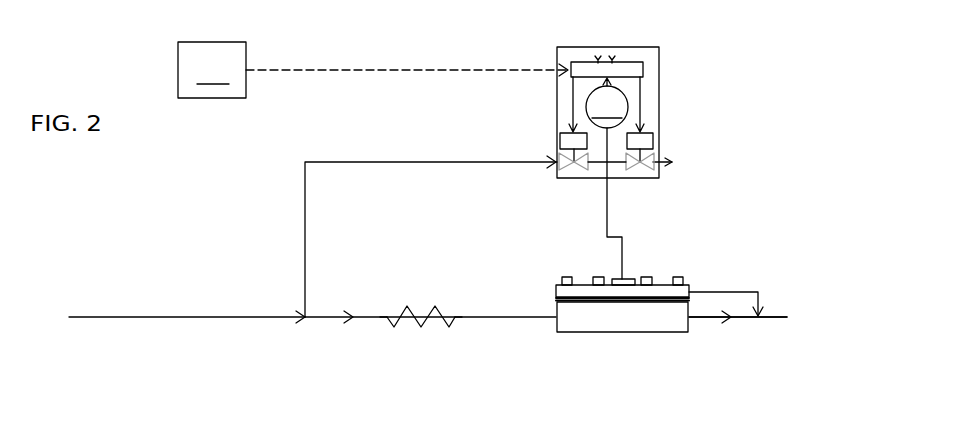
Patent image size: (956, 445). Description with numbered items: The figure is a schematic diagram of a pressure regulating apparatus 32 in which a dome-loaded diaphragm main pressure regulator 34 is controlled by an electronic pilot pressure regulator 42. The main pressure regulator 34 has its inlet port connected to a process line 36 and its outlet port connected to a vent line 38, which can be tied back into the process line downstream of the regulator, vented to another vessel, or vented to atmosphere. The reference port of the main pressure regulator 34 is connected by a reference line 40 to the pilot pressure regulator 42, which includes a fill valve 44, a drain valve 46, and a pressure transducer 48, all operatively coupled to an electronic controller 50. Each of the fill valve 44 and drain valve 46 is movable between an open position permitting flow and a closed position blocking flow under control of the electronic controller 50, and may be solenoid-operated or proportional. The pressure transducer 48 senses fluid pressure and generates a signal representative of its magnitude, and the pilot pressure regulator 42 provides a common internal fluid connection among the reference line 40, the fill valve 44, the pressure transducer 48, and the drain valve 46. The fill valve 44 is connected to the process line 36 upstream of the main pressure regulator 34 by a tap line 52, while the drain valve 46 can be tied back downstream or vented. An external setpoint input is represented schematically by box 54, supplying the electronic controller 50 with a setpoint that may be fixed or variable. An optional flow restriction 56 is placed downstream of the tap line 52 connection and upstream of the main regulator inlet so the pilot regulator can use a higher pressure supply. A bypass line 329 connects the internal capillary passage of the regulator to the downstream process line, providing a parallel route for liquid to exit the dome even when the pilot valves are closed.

The pressure regulating apparatus 32 is at (684, 64).
The main pressure regulator 34 is at (624, 326).
The process line 36 is at (196, 317).
The vent line 38 is at (769, 318).
The reference line 40 is at (607, 235).
The pilot pressure regulator 42 is at (659, 91).
The fill valve 44 is at (569, 137).
The drain valve 46 is at (648, 138).
The pressure transducer 48 is at (607, 103).
The electronic controller 50 is at (626, 72).
The tap line 52 is at (422, 163).
The external setpoint input 54 is at (373, 70).
The flow restriction 56 is at (424, 328).
The bypass line 329 is at (726, 292).